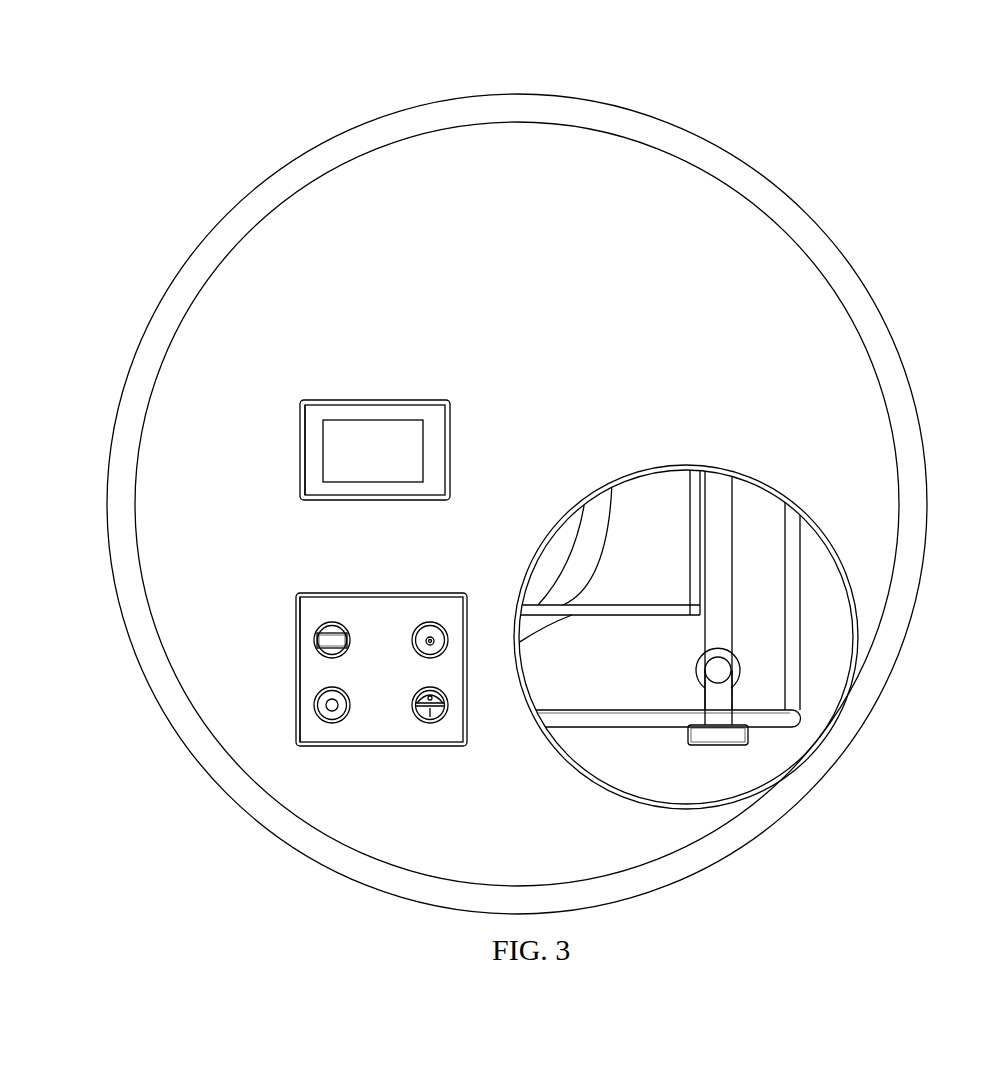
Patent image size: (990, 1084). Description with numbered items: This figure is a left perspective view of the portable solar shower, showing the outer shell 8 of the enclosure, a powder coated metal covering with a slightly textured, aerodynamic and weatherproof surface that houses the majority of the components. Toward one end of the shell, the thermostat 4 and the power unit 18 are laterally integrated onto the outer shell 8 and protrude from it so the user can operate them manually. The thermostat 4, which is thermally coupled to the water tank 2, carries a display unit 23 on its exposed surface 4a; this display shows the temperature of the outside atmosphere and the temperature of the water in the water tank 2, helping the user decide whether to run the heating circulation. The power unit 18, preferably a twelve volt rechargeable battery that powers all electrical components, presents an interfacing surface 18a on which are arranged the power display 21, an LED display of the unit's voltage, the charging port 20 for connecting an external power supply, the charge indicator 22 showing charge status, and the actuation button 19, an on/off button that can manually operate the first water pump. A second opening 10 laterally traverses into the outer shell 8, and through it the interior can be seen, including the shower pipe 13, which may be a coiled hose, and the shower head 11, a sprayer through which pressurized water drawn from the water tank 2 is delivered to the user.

The outer shell 8 is at (627, 126).
The thermostat 4 is at (323, 412).
The display unit 23 is at (412, 432).
The exposed surface 4a is at (310, 480).
The power unit 18 is at (388, 633).
The interfacing surface 18a is at (315, 668).
The power display 21 is at (332, 623).
The charging port 20 is at (432, 626).
The charge indicator 22 is at (337, 713).
The actuation button 19 is at (433, 718).
The second opening 10 is at (826, 641).
The shower pipe 13 is at (713, 492).
The water tank 2 is at (572, 583).
The shower head 11 is at (733, 740).